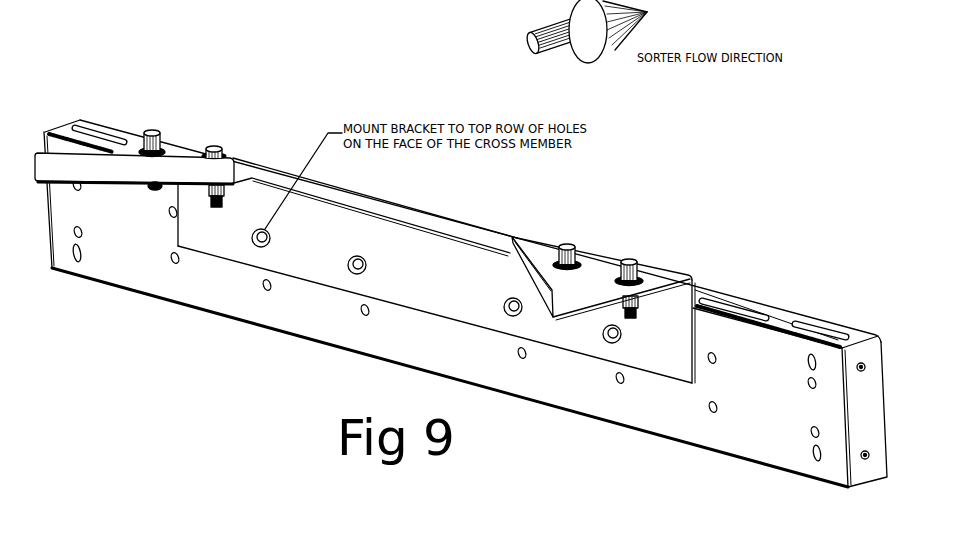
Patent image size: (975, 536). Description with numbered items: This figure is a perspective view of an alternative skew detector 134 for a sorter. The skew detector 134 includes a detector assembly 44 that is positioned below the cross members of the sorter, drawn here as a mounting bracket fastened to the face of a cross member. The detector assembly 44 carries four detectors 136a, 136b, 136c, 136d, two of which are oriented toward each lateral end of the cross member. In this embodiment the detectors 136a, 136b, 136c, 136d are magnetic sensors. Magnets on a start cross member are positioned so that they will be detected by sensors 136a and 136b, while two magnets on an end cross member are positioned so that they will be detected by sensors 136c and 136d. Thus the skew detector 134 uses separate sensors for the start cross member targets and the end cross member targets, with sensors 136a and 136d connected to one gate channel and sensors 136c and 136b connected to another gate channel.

The skew detector 134 is at (826, 222).
The detector assembly 44 is at (467, 221).
The detector 136a is at (152, 130).
The detector 136b is at (632, 261).
The detector 136c is at (216, 147).
The detector 136d is at (569, 245).